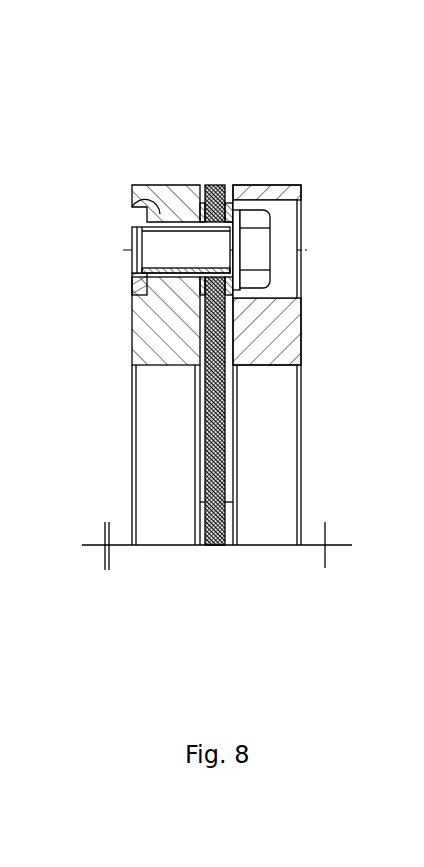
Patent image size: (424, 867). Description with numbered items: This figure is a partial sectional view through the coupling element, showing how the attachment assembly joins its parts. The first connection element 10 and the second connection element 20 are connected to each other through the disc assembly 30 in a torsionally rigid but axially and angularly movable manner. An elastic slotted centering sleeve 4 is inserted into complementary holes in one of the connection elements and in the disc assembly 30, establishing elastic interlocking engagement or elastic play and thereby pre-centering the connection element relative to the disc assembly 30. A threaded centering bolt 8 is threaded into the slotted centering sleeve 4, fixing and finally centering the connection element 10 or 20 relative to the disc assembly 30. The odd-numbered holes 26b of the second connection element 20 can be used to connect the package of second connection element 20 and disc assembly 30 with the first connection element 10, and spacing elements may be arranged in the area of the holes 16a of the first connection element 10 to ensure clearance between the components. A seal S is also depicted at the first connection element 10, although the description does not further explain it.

The first connection element 10 is at (167, 200).
The hole 16a is at (130, 193).
The seal S is at (130, 287).
The disc assembly 30 is at (218, 187).
The second connection element 20 is at (292, 187).
The hole 26b is at (285, 217).
The slotted centering sleeve 4 is at (178, 252).
The threaded centering bolt 8 is at (247, 243).